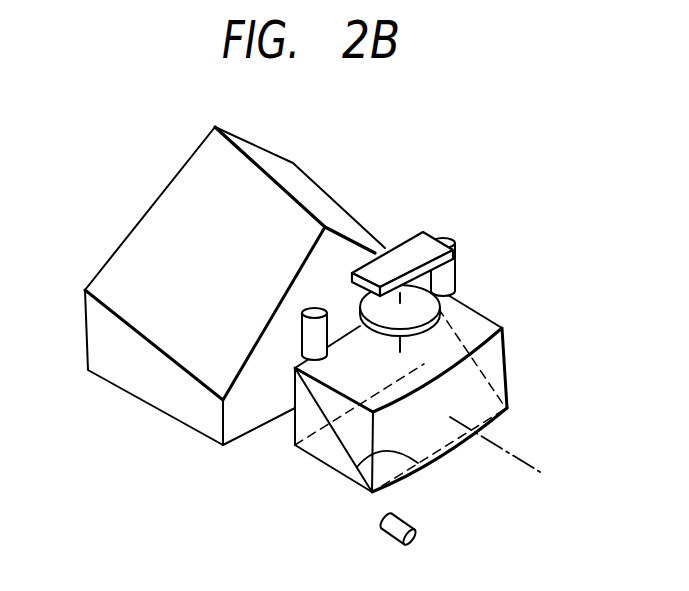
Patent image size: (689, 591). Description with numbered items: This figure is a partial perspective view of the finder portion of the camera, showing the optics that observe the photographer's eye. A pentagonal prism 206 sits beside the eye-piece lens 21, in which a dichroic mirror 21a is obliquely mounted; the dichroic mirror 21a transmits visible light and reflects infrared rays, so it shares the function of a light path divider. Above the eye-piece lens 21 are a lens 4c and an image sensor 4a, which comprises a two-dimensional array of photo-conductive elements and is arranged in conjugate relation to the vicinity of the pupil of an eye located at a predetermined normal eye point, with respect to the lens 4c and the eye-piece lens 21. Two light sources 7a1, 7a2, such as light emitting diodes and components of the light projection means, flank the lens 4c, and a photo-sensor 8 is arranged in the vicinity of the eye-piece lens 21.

The pentagonal prism 206 is at (197, 155).
The eye-piece lens 21 is at (508, 371).
The dichroic mirror 21a is at (413, 466).
The image sensor 4a is at (408, 232).
The lens 4c is at (358, 301).
The light source 7a1 is at (300, 342).
The light source 7a2 is at (455, 265).
The photo-sensor 8 is at (379, 534).